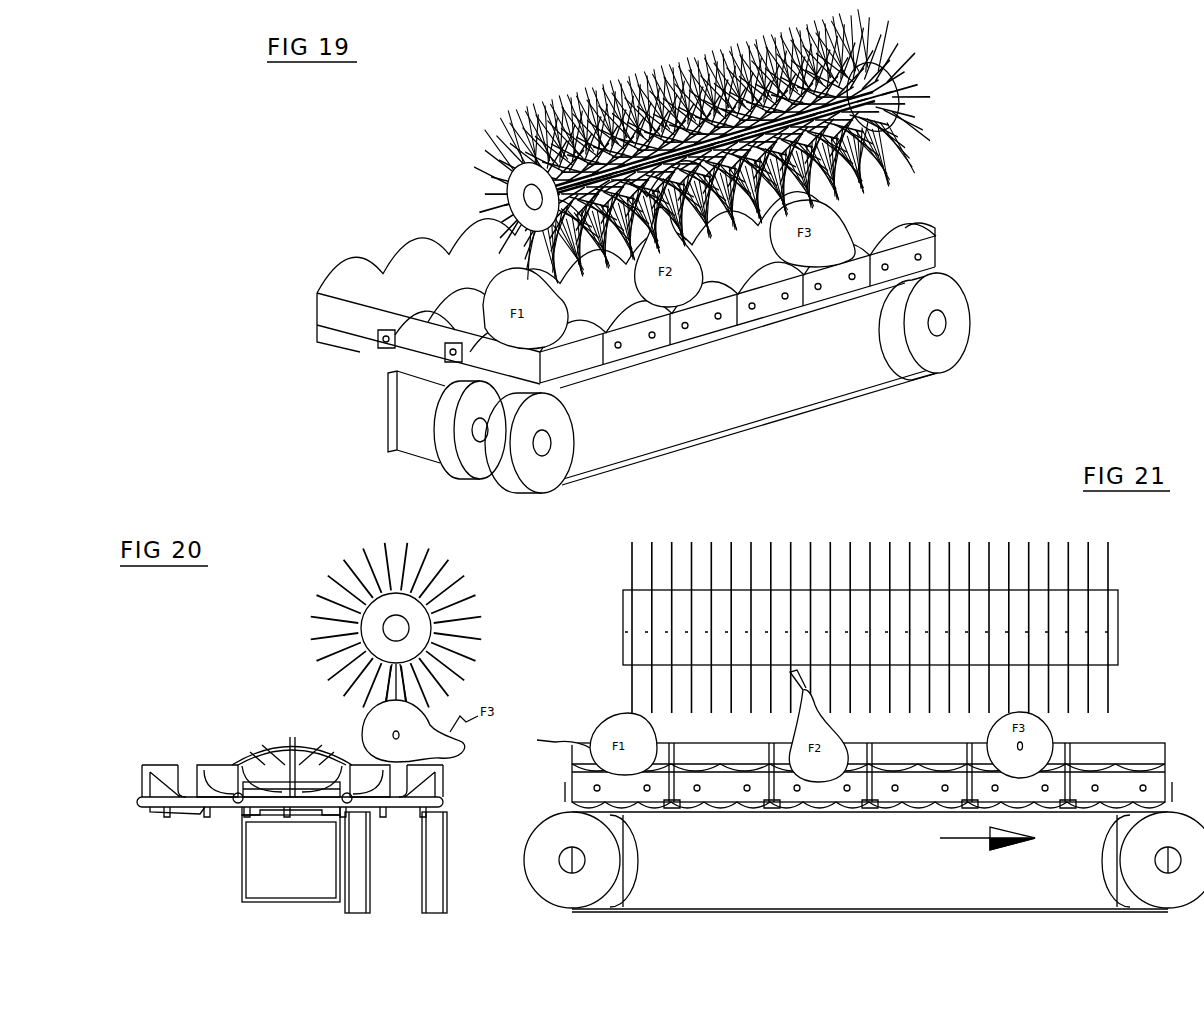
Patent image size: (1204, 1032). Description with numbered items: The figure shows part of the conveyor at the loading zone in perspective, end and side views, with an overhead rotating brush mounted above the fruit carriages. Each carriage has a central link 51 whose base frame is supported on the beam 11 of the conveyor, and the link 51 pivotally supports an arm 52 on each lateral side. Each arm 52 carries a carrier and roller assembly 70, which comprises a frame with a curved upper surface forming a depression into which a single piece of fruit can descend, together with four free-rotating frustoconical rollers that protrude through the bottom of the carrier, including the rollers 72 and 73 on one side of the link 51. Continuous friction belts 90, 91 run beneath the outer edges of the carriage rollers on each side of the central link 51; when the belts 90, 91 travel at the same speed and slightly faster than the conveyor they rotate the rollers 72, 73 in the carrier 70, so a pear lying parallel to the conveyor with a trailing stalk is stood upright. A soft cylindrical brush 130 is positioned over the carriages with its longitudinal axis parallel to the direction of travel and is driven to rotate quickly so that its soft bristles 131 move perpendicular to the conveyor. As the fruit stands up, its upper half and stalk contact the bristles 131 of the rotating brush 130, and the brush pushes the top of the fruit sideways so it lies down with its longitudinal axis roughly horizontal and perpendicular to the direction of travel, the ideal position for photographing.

In FIG. 19, the beam 11 is at (388, 413).
In FIG. 20, the beam 11 is at (240, 868).
In FIG. 20, the central link 51 is at (282, 742).
In FIG. 20, the arm 52 is at (182, 818).
In FIG. 19, the carrier and roller assembly 70 is at (315, 293).
In FIG. 20, the carrier and roller assembly 70 is at (160, 762).
In FIG. 21, the carrier and roller assembly 70 is at (1115, 783).
In FIG. 19, the frustoconical roller 72 is at (950, 290).
In FIG. 19, the frustoconical roller 73 is at (925, 228).
In FIG. 19, the friction belt 90 is at (742, 432).
In FIG. 20, the friction belt 90 is at (432, 910).
In FIG. 21, the friction belt 90 is at (805, 908).
In FIG. 19, the friction belt 91 is at (440, 462).
In FIG. 20, the friction belt 91 is at (358, 910).
In FIG. 19, the cylindrical brush 130 is at (506, 197).
In FIG. 20, the cylindrical brush 130 is at (352, 648).
In FIG. 21, the cylindrical brush 130 is at (1120, 618).
In FIG. 19, the bristles 131 is at (490, 148).
In FIG. 20, the bristles 131 is at (332, 600).
In FIG. 21, the bristles 131 is at (1112, 560).